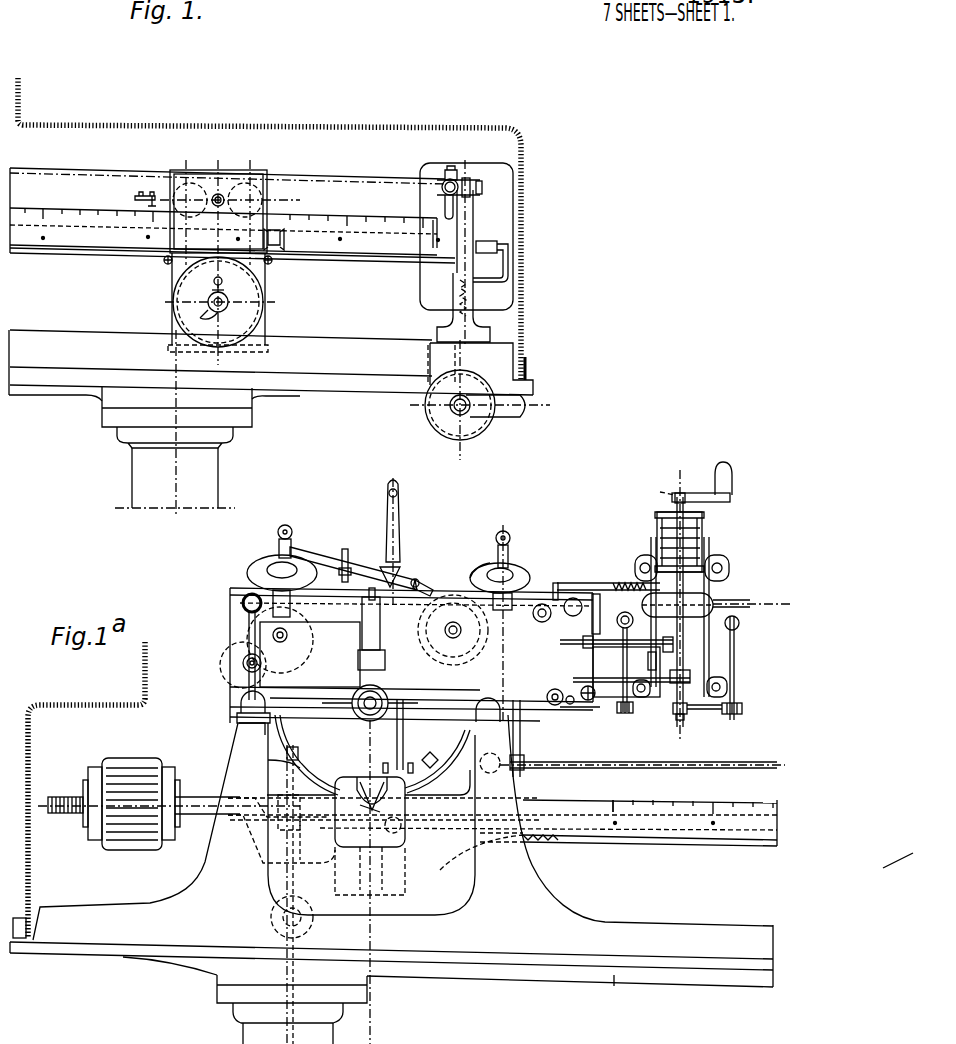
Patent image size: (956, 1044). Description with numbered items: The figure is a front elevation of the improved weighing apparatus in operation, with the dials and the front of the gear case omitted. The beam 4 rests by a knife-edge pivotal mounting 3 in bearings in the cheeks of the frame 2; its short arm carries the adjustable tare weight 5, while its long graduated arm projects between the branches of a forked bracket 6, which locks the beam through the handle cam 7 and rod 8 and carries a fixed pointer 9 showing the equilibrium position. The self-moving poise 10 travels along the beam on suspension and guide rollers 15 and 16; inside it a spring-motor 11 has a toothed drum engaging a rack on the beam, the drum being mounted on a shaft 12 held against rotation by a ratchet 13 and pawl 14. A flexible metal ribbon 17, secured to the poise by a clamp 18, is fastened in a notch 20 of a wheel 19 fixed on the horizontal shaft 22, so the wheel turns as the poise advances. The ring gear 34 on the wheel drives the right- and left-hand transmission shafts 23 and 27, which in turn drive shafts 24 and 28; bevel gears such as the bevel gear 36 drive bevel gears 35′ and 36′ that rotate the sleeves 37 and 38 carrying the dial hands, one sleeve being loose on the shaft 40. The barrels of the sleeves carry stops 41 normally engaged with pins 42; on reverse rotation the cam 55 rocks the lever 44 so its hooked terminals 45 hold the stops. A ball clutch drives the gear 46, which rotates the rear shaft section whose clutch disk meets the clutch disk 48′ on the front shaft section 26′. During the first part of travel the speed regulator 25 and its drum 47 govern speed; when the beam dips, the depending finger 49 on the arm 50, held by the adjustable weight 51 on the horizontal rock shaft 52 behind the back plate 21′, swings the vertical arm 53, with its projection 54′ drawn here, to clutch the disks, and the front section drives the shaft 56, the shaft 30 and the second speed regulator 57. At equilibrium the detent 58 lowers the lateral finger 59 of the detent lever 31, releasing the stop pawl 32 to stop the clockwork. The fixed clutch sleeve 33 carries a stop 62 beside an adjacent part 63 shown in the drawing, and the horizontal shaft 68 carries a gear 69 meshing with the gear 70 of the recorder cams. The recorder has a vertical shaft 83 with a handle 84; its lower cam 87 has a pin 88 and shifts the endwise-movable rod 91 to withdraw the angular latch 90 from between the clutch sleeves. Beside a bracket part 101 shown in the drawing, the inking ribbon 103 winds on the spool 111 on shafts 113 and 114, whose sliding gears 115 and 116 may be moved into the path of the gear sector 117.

In FIG. 1A, the frame 2 is at (623, 990).
In FIG. 1A, the knife-edge pivotal mounting 3 is at (358, 805).
In FIG. 1A, the beam 4 is at (561, 790).
In FIG. 1A, the adjustable tare weight 5 is at (137, 758).
In FIG. 1, the forked bracket 6 is at (474, 226).
In FIG. 1, the handle cam 7 is at (521, 404).
In FIG. 1, the rod 8 is at (458, 298).
In FIG. 1, the fixed pointer 9 is at (505, 242).
In FIG. 1, the self-moving poise 10 is at (216, 178).
In FIG. 1, the spring-motor 11 is at (263, 299).
In FIG. 1A, the spring-motor 11 is at (370, 836).
In FIG. 1, the shaft 12 is at (209, 300).
In FIG. 1, the ratchet 13 is at (199, 321).
In FIG. 1, the pawl 14 is at (215, 283).
In FIG. 1, the suspension rollers 15 is at (268, 200).
In FIG. 1, the guide rollers 16 is at (271, 263).
In FIG. 1A, the flexible metal ribbon 17 is at (612, 805).
In FIG. 1, the clamp 18 is at (139, 232).
In FIG. 1A, the wheel 19 is at (272, 745).
In FIG. 1A, the notch 20 is at (268, 767).
In FIG. 1A, the back plate 21′ is at (232, 590).
In FIG. 1A, the horizontal shaft 22 is at (357, 718).
In FIG. 1A, the right-hand transmission shaft 23 is at (451, 620).
In FIG. 1A, the shaft 24 is at (548, 604).
In FIG. 1A, the speed regulator 25 is at (583, 600).
In FIG. 1A, the front shaft section 26′ is at (581, 728).
In FIG. 1A, the left-hand transmission shaft 27 is at (242, 665).
In FIG. 1A, the shaft 28 is at (272, 635).
In FIG. 1A, the shaft 30 is at (503, 530).
In FIG. 1A, the detent lever 31 is at (416, 578).
In FIG. 1A, the stop pawl 32 is at (606, 614).
In FIG. 1A, the fixed clutch sleeve 33 is at (362, 722).
In FIG. 1A, the ring gear 34 is at (289, 762).
In FIG. 1A, the bevel gear 35′ is at (472, 574).
In FIG. 1A, the bevel gear 36 is at (280, 648).
In FIG. 1A, the bevel gear 36′ is at (262, 593).
In FIG. 1A, the sleeve 37 is at (493, 563).
In FIG. 1A, the sleeve 38 is at (270, 562).
In FIG. 1A, the shaft 40 is at (285, 525).
In FIG. 1A, the stops 41 is at (346, 560).
In FIG. 1A, the pins 42 is at (300, 555).
In FIG. 1A, the lever 44 is at (381, 569).
In FIG. 1A, the hooked terminals 45 is at (296, 549).
In FIG. 1A, the gear 46 is at (555, 580).
In FIG. 1A, the drum 47 is at (598, 560).
In FIG. 1A, the clutch disk 48′ is at (642, 750).
In FIG. 1, the depending finger 49 is at (443, 217).
In FIG. 1, the arm 50 is at (440, 178).
In FIG. 1, the adjustable weight 51 is at (458, 184).
In FIG. 1, the horizontal rock shaft 52 is at (26, 171).
In FIG. 1A, the vertical arm 53 is at (522, 742).
In FIG. 1A, the roller 54′ is at (489, 750).
In FIG. 1A, the cam 55 is at (427, 800).
In FIG. 1A, the shaft 56 is at (574, 709).
In FIG. 1A, the speed regulator 57 is at (576, 699).
In FIG. 1A, the detent 58 is at (395, 727).
In FIG. 1A, the lateral finger 59 is at (370, 596).
In FIG. 1A, the stop 62 is at (360, 670).
In FIG. 1A, the post 63 is at (362, 650).
In FIG. 1A, the horizontal shaft 68 is at (617, 622).
In FIG. 1A, the gear 69 is at (665, 631).
In FIG. 1A, the gear 70 is at (626, 671).
In FIG. 1A, the vertical shaft 83 is at (690, 504).
In FIG. 1A, the handle 84 is at (680, 492).
In FIG. 1A, the lower cam 87 is at (685, 683).
In FIG. 1A, the pin 88 is at (683, 670).
In FIG. 1A, the angular latch 90 is at (439, 747).
In FIG. 1A, the endwise-movable rod 91 is at (647, 697).
In FIG. 1A, the lug 101 is at (712, 578).
In FIG. 1A, the inking ribbon 103 is at (715, 605).
In FIG. 1A, the spool 111 is at (757, 603).
In FIG. 1A, the shaft 113 is at (735, 653).
In FIG. 1A, the shaft 114 is at (585, 650).
In FIG. 1A, the gear 115 is at (742, 708).
In FIG. 1A, the gear 116 is at (630, 714).
In FIG. 1A, the gear sector 117 is at (701, 721).